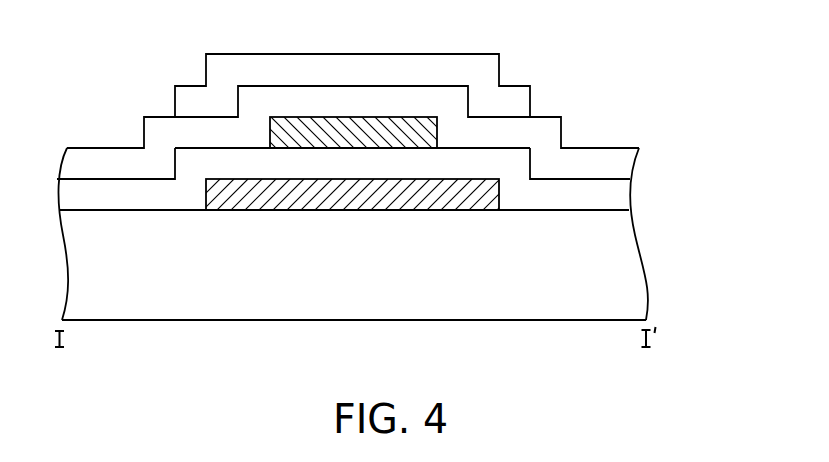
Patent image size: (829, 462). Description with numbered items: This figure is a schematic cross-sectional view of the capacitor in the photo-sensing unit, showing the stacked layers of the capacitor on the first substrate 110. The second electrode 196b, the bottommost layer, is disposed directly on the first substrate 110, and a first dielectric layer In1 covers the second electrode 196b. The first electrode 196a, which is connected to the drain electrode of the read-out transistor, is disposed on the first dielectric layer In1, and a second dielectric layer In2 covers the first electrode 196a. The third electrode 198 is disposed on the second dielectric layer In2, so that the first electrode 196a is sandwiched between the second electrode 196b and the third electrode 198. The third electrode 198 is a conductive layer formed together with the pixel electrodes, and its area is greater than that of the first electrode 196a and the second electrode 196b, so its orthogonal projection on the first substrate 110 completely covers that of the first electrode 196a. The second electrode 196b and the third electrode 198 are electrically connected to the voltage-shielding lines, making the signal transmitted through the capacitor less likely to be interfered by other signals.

The third electrode 198 is at (365, 67).
The first electrode 196a is at (412, 126).
The second electrode 196b is at (457, 198).
The second dielectric layer In2 is at (622, 160).
The first dielectric layer In1 is at (619, 193).
The first substrate 110 is at (625, 255).